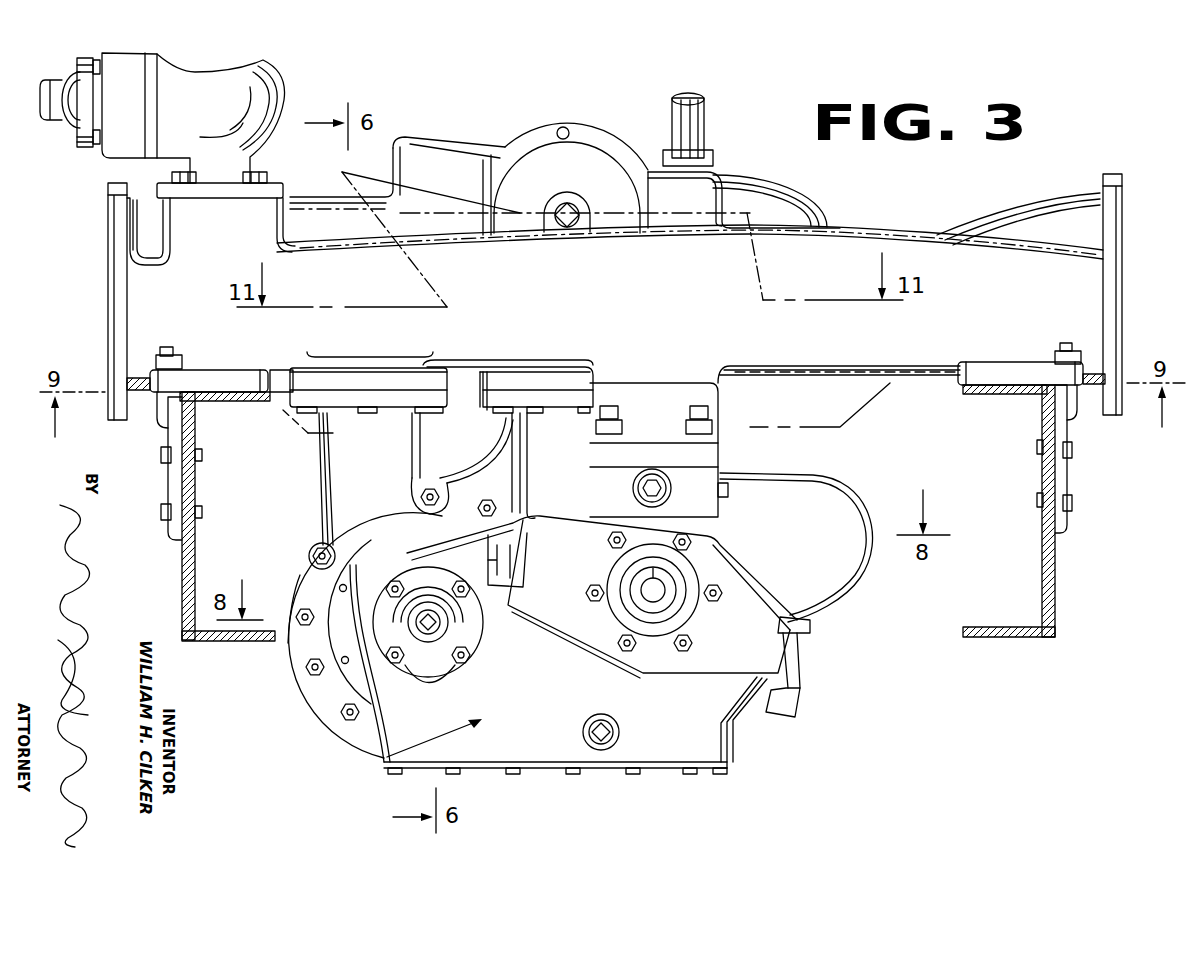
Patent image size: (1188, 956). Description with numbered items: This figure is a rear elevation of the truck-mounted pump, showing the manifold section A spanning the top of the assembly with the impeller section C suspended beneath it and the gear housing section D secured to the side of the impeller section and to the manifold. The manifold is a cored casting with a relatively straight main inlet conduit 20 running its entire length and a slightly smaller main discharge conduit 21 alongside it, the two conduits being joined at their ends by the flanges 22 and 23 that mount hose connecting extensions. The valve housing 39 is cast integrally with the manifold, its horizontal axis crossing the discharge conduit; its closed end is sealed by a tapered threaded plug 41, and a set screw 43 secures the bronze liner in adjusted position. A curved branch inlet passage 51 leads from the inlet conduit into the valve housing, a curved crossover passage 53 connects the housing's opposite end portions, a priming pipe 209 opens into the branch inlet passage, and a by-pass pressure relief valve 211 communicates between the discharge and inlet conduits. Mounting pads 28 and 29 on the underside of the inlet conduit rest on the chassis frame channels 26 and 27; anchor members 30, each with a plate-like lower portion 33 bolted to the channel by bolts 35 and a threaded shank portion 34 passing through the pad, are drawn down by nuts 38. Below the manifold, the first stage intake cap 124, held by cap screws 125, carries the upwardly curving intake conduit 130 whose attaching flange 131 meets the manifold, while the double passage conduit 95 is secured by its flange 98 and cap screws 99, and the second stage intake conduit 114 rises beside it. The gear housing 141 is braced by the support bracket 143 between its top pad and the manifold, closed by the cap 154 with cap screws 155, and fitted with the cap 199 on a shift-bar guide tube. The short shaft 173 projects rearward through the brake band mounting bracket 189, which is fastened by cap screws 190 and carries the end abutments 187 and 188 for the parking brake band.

The pressure relief valve 211 is at (286, 85).
The flange 22 is at (106, 272).
The flange 23 is at (1113, 305).
The main inlet conduit 20 is at (628, 312).
The crossover passage 53 is at (437, 152).
The valve housing 39 is at (607, 153).
The set screw 43 is at (566, 130).
The tapered threaded plug 41 is at (566, 230).
The pipe 209 is at (695, 125).
The branch inlet passage 51 is at (783, 197).
The manifold section A is at (762, 197).
The main discharge conduit 21 is at (1050, 213).
The mounting pad 28 is at (225, 377).
The mounting pad 29 is at (990, 370).
The frame channel 26 is at (192, 578).
The frame channel 27 is at (1043, 603).
The anchor member 30 is at (162, 423).
The plate-like lower portion 33 is at (168, 485).
The bolts 35 is at (200, 455).
The shank portion 34 is at (167, 350).
The nuts 38 is at (175, 362).
The attaching flange 131 is at (368, 382).
The intake conduit 130 is at (385, 470).
The flange 98 is at (578, 395).
The cap screws 99 is at (523, 418).
The second stage intake conduit 114 is at (497, 457).
The double passage conduit 95 is at (565, 454).
The gear housing support bracket 143 is at (718, 400).
The cap 199 is at (648, 488).
The cap screws 125 is at (310, 553).
The first stage intake cap 124 is at (307, 582).
The impeller section C is at (300, 682).
The cap 154 is at (473, 642).
The cap screws 155 is at (455, 588).
The gear housing 141 is at (383, 757).
The gear housing section D is at (707, 727).
The brake band mounting bracket 189 is at (767, 591).
The end abutment 188 is at (520, 545).
The cap screws 190 is at (610, 542).
The short shaft 173 is at (660, 590).
The end abutment 187 is at (810, 627).